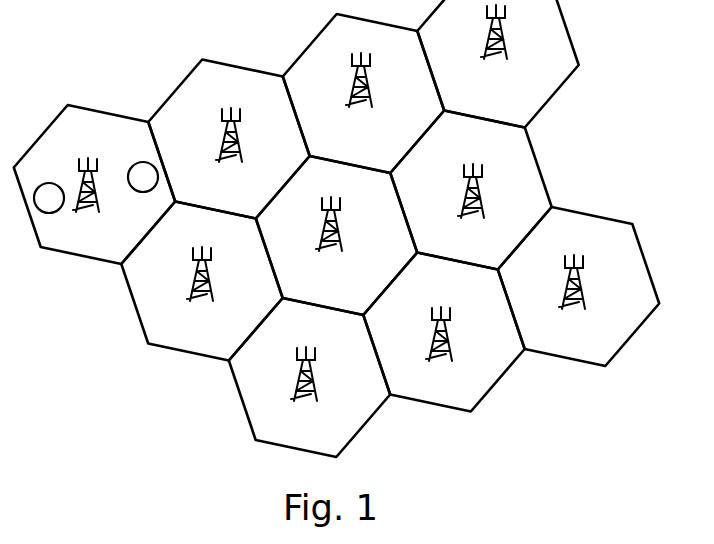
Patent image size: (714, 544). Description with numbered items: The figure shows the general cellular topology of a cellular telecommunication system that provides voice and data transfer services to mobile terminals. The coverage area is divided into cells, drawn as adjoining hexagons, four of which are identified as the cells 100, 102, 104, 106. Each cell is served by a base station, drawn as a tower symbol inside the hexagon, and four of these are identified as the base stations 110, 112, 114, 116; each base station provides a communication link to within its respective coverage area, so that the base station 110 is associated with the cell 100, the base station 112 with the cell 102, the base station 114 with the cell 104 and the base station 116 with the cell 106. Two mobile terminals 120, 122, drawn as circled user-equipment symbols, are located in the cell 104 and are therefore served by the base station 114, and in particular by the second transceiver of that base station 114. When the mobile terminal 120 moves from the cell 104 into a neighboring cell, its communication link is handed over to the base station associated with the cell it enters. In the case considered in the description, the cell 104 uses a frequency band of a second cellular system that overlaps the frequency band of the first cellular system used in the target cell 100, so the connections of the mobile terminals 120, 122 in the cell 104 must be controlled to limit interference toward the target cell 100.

The cell 100 is at (497, 64).
The cell 102 is at (336, 235).
The cell 104 is at (94, 184).
The cell 106 is at (578, 286).
The base station 110 is at (511, 42).
The base station 112 is at (345, 237).
The base station 114 is at (100, 183).
The base station 116 is at (589, 289).
The mobile terminal 120 is at (57, 183).
The mobile terminal 122 is at (136, 192).